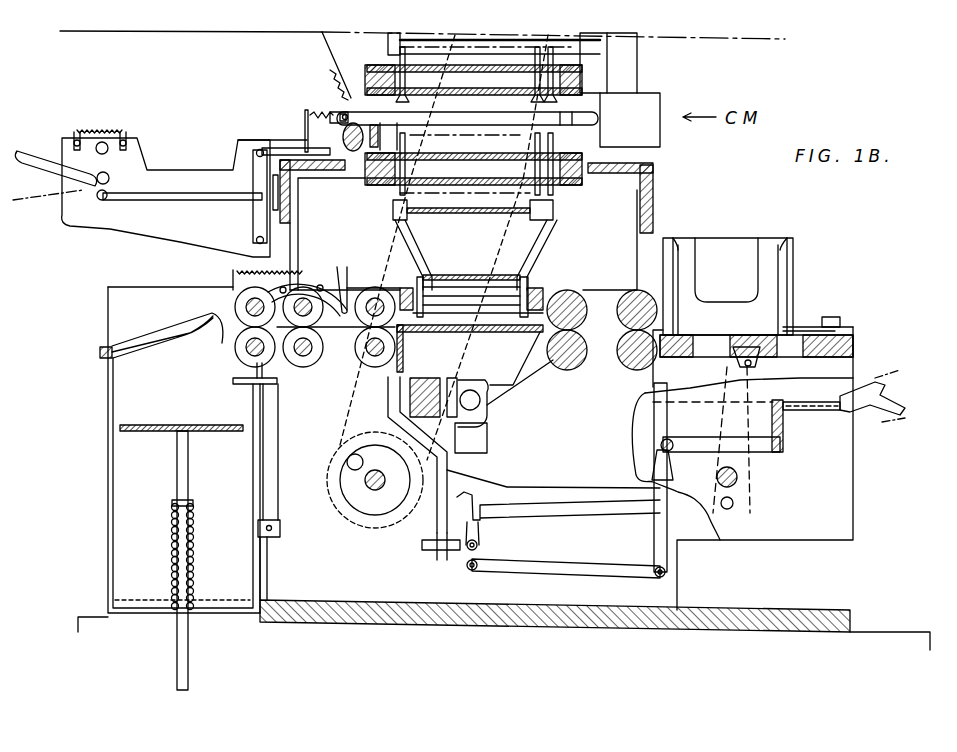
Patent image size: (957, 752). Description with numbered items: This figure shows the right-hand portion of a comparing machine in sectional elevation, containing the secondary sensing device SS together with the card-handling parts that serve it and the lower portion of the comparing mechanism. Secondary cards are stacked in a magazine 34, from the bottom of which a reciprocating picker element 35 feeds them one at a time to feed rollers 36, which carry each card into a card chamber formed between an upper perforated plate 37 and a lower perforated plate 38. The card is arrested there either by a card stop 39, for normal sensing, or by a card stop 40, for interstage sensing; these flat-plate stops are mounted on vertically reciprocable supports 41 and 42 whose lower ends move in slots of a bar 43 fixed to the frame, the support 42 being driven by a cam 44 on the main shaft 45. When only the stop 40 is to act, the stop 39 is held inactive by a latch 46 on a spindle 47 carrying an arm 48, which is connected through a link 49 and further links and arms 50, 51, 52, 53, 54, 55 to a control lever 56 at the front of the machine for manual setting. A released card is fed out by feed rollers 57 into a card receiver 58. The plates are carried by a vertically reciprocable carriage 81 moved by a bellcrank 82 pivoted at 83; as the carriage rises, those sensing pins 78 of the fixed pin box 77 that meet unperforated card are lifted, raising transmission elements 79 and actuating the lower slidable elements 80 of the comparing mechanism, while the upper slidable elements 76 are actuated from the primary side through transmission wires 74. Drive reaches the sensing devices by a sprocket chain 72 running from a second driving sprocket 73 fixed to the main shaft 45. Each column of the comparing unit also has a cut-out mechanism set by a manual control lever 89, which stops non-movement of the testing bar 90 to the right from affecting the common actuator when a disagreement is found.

The magazine 34 is at (776, 266).
The reciprocating picker element 35 is at (790, 330).
The feed rollers 36 is at (615, 357).
The upper perforated plate 37 is at (590, 297).
The lower perforated plate 38 is at (540, 364).
The card stop 39 is at (468, 355).
The card stop 40 is at (358, 373).
The vertically reciprocable support 41 is at (425, 386).
The vertically reciprocable support 42 is at (392, 410).
The bar 43 is at (431, 557).
The cam 44 is at (390, 508).
The main shaft 45 is at (372, 486).
The latch 46 is at (472, 492).
The spindle 47 is at (480, 542).
The arm 48 is at (483, 556).
The link 49 is at (563, 572).
The link 50 is at (654, 540).
The link 51 is at (665, 463).
The link 52 is at (700, 442).
The link 53 is at (785, 446).
The link 54 is at (787, 420).
The arm 55 is at (820, 413).
The control lever 56 is at (893, 406).
The feed rollers 57 is at (322, 352).
The card receiver 58 is at (122, 402).
The sprocket chain 72 is at (352, 401).
The second driving sprocket 73 is at (341, 437).
The transmission wires 74 is at (432, 52).
The upper slidable elements 76 is at (395, 50).
The fixed pin box 77 is at (545, 300).
The sensing pins 78 is at (470, 341).
The transmission elements 79 is at (412, 241).
The lower slidable elements 80 is at (398, 192).
The carriage 81 is at (490, 398).
The bellcrank 82 is at (449, 376).
The pivot 83 is at (471, 438).
The control lever 89 is at (45, 157).
The testing bar 90 is at (599, 118).
The secondary sensing device SS is at (556, 275).